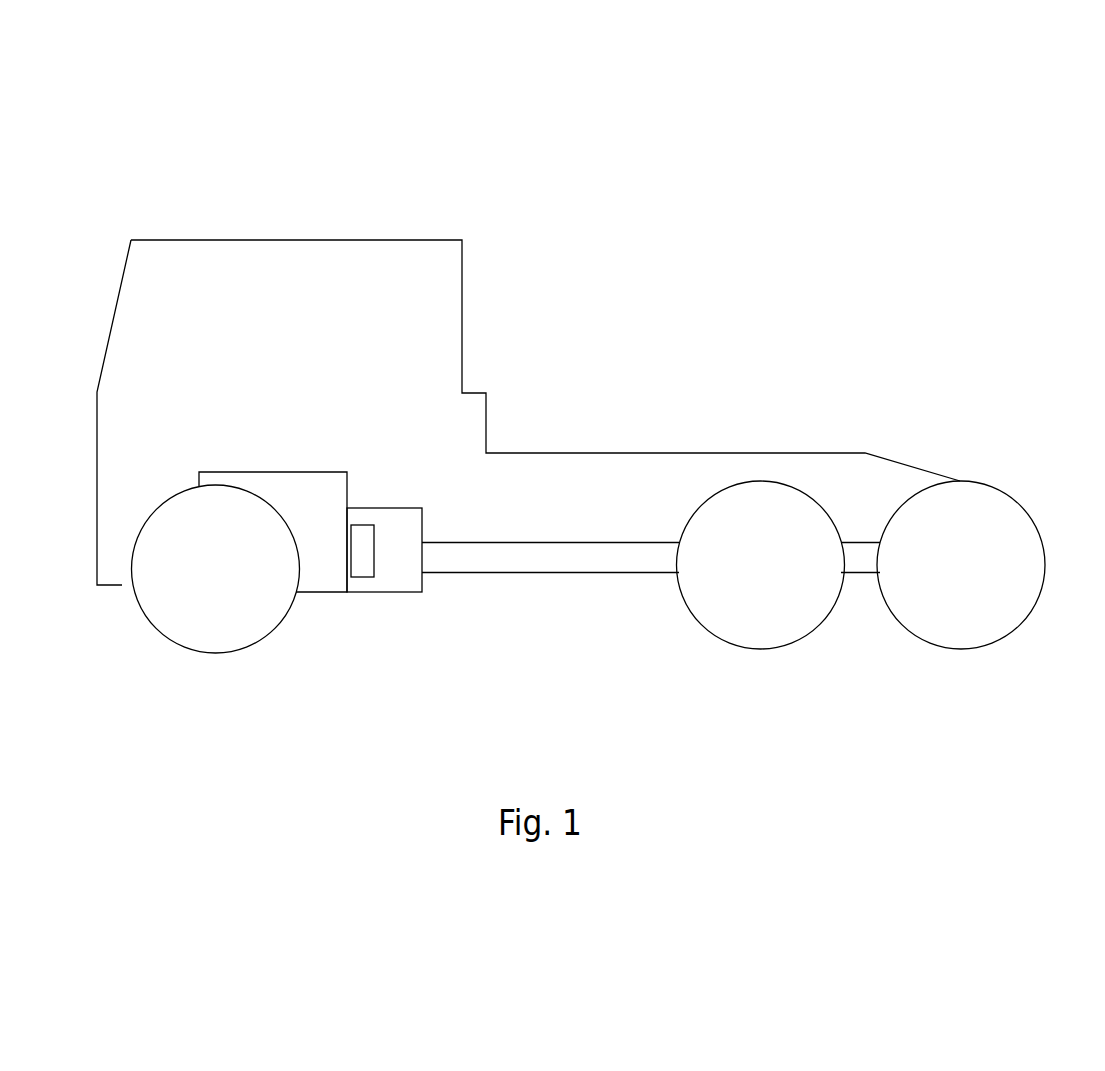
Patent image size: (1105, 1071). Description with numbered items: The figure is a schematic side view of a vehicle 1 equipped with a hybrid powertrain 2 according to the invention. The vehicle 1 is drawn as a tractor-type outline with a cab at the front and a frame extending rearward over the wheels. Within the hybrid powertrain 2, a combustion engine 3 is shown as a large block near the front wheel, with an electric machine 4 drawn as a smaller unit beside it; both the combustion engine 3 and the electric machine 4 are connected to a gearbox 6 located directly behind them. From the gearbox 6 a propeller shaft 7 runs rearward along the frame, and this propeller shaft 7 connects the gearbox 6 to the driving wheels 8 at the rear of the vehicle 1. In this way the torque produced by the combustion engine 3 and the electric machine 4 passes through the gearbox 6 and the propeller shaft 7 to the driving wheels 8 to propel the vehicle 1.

The vehicle 1 is at (465, 170).
The hybrid powertrain 2 is at (539, 565).
The combustion engine 3 is at (243, 472).
The electric machine 4 is at (363, 525).
The gearbox 6 is at (407, 592).
The propeller shaft 7 is at (553, 573).
The driving wheels 8 is at (808, 638).